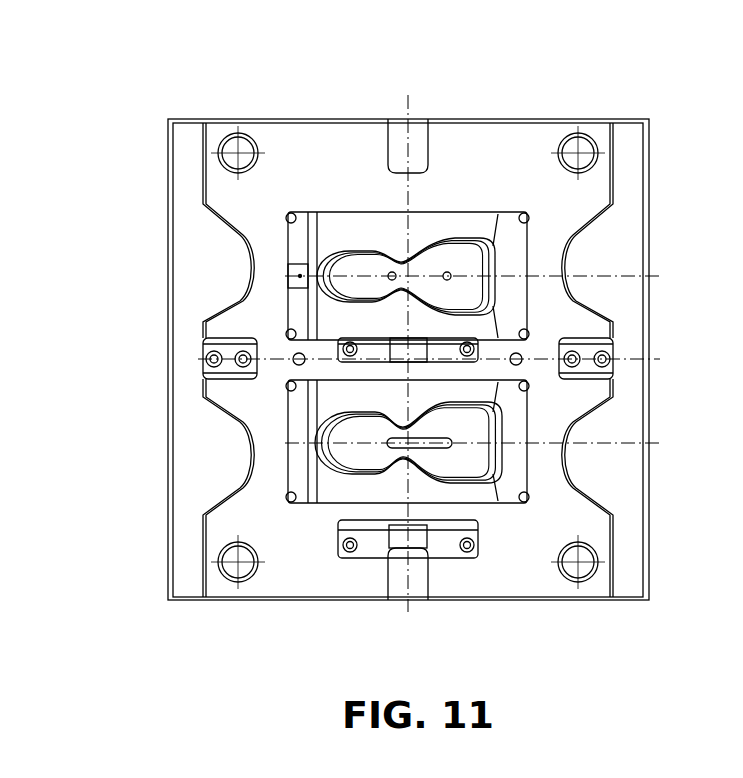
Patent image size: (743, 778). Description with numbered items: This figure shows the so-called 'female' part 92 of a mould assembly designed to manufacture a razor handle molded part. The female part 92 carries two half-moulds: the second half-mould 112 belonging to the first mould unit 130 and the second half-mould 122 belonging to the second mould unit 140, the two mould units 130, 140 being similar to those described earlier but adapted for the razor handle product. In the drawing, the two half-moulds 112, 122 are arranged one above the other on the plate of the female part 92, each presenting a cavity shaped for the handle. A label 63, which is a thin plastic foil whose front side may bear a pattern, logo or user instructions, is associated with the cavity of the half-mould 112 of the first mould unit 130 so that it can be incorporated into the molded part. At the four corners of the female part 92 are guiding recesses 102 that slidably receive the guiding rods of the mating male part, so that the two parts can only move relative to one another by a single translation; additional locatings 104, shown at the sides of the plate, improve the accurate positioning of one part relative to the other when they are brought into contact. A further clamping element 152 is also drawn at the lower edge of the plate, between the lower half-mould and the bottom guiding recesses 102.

The female part 92 is at (660, 568).
The guiding recesses 102 is at (242, 143).
The locatings 104 is at (236, 364).
The second half-mould of the first mould unit 112 is at (433, 526).
The second half-mould of the second mould unit 122 is at (445, 232).
The first mould unit 130 is at (502, 525).
The second mould unit 140 is at (502, 195).
The lower clamp 152 is at (337, 582).
The label 63 is at (476, 458).